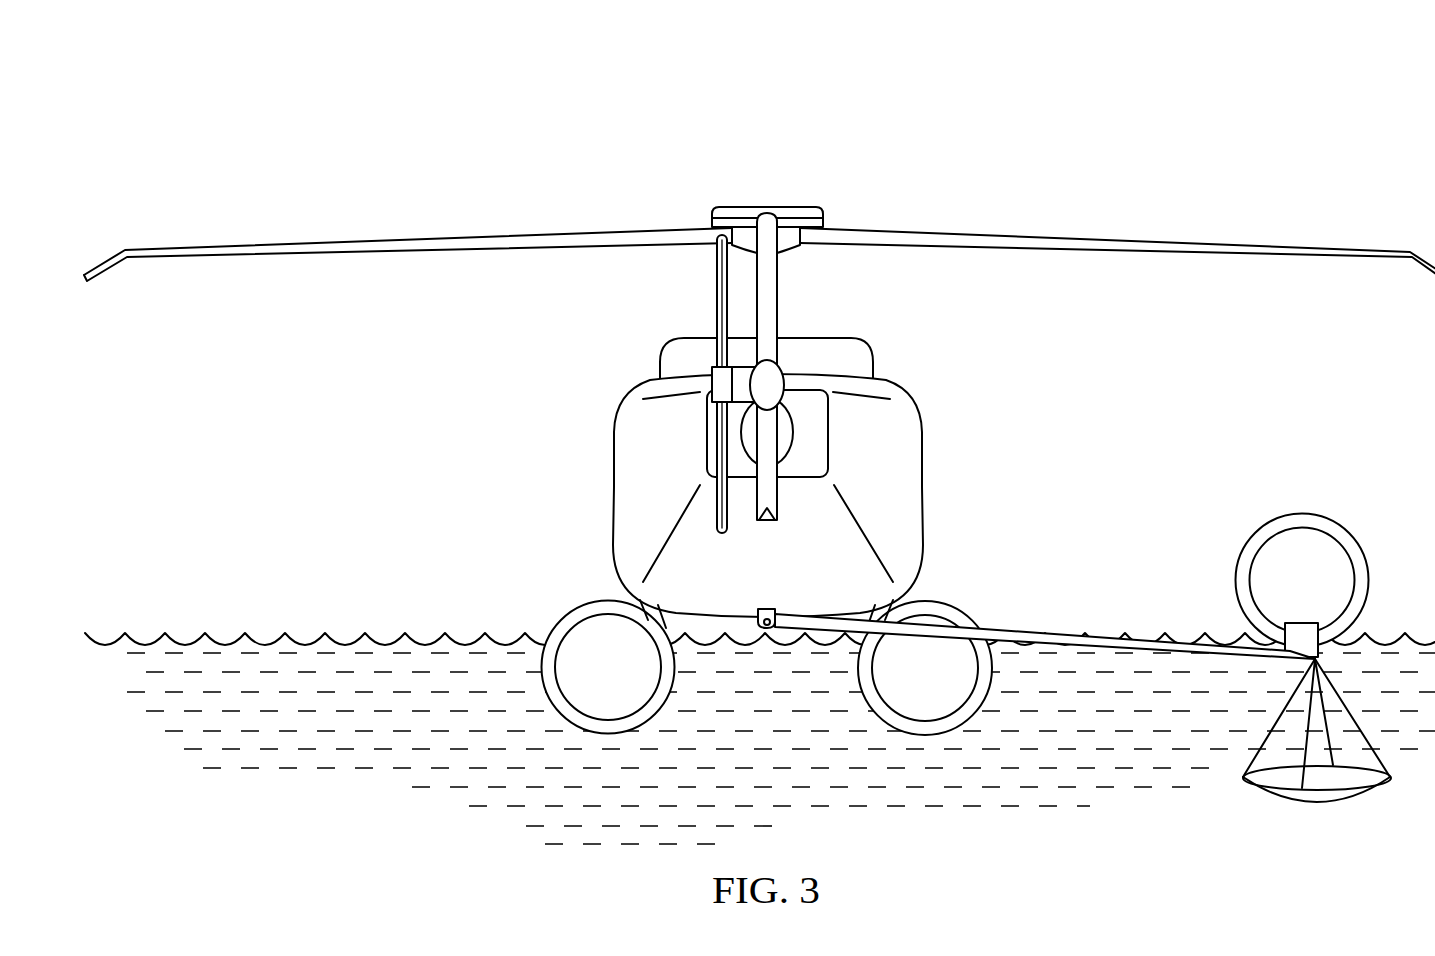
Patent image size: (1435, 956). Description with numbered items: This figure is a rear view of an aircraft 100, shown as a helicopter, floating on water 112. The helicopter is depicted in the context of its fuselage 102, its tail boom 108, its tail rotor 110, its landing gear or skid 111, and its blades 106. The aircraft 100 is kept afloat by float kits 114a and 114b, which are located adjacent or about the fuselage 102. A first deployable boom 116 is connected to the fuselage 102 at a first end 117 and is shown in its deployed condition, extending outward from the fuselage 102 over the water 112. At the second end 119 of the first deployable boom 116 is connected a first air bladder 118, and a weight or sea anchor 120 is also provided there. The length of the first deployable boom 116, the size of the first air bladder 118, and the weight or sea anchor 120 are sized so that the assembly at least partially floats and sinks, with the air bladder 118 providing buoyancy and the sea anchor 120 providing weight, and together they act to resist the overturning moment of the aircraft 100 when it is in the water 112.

The aircraft 100 is at (759, 388).
The fuselage 102 is at (903, 398).
The blades 106 is at (975, 232).
The tail boom 108 is at (820, 452).
The tail rotor 110 is at (717, 293).
The landing gear or skid 111 is at (645, 607).
The water 112 is at (187, 632).
The float kit 114a is at (582, 603).
The float kit 114b is at (950, 606).
The first deployable boom 116 is at (1058, 628).
The first end 117 is at (744, 611).
The first air bladder 118 is at (1312, 515).
The second end 119 is at (1323, 657).
The weight or sea anchor 120 is at (1345, 798).